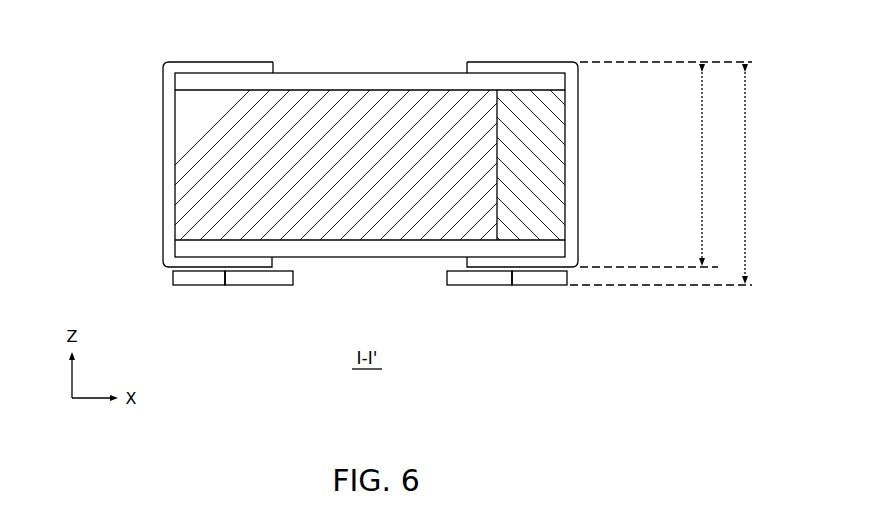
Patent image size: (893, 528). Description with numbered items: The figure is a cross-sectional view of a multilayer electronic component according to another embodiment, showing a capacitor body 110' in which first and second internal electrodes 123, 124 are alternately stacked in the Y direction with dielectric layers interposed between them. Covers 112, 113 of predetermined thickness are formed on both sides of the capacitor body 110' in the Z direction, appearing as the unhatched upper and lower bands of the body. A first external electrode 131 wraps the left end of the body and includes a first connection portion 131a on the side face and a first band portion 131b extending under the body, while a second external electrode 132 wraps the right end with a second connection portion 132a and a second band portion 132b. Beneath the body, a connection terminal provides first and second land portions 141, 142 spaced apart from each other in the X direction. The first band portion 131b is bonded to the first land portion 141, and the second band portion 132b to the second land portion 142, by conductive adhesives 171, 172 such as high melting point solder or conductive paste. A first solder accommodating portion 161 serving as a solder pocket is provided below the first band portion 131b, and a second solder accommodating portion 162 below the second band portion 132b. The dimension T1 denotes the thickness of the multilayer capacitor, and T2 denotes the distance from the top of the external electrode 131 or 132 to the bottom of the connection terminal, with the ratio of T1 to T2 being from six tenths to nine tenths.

The capacitor body 110' is at (370, 139).
The cover 112 is at (333, 85).
The cover 113 is at (368, 250).
The first internal electrode 123 is at (236, 100).
The second internal electrode 124 is at (558, 176).
The first external electrode 131 is at (159, 167).
The first connection portion 131a is at (167, 238).
The first band portion 131b is at (184, 262).
The second external electrode 132 is at (581, 164).
The second connection portion 132a is at (580, 220).
The second band portion 132b is at (556, 249).
The first land portion 141 is at (242, 279).
The second land portion 142 is at (492, 283).
The first solder accommodating portion 161 is at (199, 279).
The second solder accommodating portion 162 is at (537, 283).
The conductive adhesive 171 is at (215, 279).
The conductive adhesive 172 is at (508, 283).
The thickness of the multilayer capacitor T1 is at (653, 167).
The distance from top of external electrode to bottom of connection terminal T2 is at (670, 173).